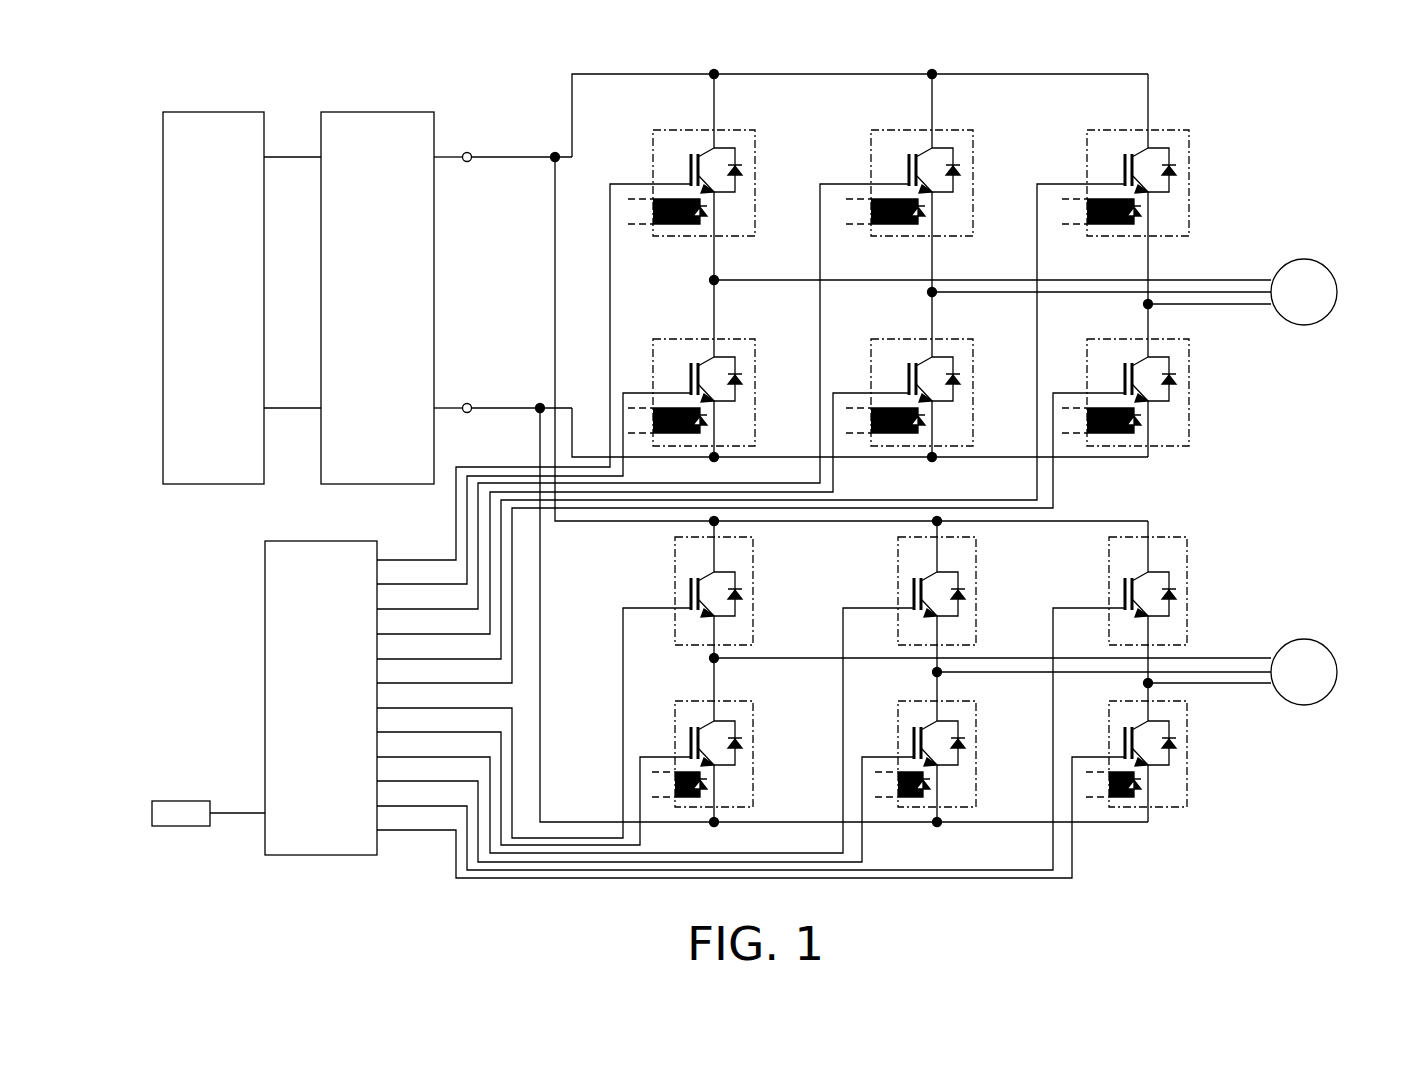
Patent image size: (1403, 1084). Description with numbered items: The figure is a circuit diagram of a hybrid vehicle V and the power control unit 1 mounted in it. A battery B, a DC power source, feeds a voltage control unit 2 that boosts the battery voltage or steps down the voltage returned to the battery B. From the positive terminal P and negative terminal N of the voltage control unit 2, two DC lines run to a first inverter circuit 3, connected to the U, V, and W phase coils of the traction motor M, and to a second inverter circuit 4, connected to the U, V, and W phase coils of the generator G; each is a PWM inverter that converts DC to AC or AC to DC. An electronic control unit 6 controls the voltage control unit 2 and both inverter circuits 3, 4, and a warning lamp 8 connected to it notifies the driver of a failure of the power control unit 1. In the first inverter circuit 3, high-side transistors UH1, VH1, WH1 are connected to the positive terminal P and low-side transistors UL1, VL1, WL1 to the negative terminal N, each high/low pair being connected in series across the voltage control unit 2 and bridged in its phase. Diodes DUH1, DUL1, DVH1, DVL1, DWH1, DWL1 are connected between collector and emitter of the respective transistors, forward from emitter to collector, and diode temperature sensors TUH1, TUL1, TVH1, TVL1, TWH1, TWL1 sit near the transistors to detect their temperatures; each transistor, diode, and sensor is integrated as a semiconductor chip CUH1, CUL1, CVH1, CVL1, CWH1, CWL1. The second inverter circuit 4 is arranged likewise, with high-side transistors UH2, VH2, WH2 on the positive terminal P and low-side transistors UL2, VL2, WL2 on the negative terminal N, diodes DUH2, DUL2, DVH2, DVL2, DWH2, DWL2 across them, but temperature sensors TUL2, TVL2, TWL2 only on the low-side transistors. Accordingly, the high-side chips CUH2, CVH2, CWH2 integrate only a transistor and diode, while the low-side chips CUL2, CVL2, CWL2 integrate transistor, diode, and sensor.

The vehicle V is at (180, 66).
The power control unit 1 is at (330, 96).
The battery B is at (240, 112).
The voltage control unit 2 is at (414, 112).
The positive terminal P is at (470, 153).
The negative terminal N is at (470, 404).
The first inverter circuit 3 is at (1283, 152).
The second inverter circuit 4 is at (1274, 568).
The electronic control unit 6 is at (286, 541).
The warning lamp 8 is at (194, 801).
The traction motor M is at (1327, 270).
The generator G is at (1327, 652).
The high-side U-phase transistor UH1 is at (702, 150).
The high-side U-phase semiconductor chip CUH1 is at (738, 130).
The diode DUH1 is at (742, 167).
The diode temperature sensor TUH1 is at (700, 222).
The low-side U-phase transistor UL1 is at (702, 360).
The low-side U-phase semiconductor chip CUL1 is at (776, 334).
The diode DUL1 is at (738, 380).
The diode temperature sensor TUL1 is at (707, 416).
The high-side V-phase transistor VH1 is at (920, 150).
The high-side V-phase semiconductor chip CVH1 is at (975, 108).
The diode DVH1 is at (960, 167).
The diode temperature sensor TVH1 is at (918, 222).
The low-side V-phase transistor VL1 is at (920, 360).
The low-side V-phase semiconductor chip CVL1 is at (994, 334).
The diode DVL1 is at (991, 384).
The diode temperature sensor TVL1 is at (925, 416).
The high-side W-phase transistor WH1 is at (1136, 150).
The high-side W-phase semiconductor chip CWH1 is at (1191, 108).
The diode DWH1 is at (1176, 167).
The diode temperature sensor TWH1 is at (1134, 222).
The low-side W-phase transistor WL1 is at (1136, 360).
The low-side W-phase semiconductor chip CWL1 is at (1210, 334).
The diode DWL1 is at (1207, 384).
The diode temperature sensor TWL1 is at (1141, 416).
The high-side U-phase transistor UH2 is at (690, 592).
The high-side U-phase semiconductor chip CUH2 is at (790, 550).
The diode DUH2 is at (740, 590).
The low-side U-phase transistor UL2 is at (690, 740).
The low-side U-phase semiconductor chip CUL2 is at (790, 710).
The diode DUL2 is at (740, 740).
The diode temperature sensor TUL2 is at (708, 785).
The high-side V-phase transistor VH2 is at (913, 592).
The high-side V-phase semiconductor chip CVH2 is at (1013, 550).
The diode DVH2 is at (963, 590).
The low-side V-phase transistor VL2 is at (913, 740).
The low-side V-phase semiconductor chip CVL2 is at (1013, 710).
The diode DVL2 is at (963, 740).
The diode temperature sensor TVL2 is at (931, 785).
The high-side W-phase transistor WH2 is at (1124, 592).
The high-side W-phase semiconductor chip CWH2 is at (1224, 550).
The diode DWH2 is at (1174, 590).
The low-side W-phase transistor WL2 is at (1124, 740).
The low-side W-phase semiconductor chip CWL2 is at (1224, 710).
The diode DWL2 is at (1174, 740).
The diode temperature sensor TWL2 is at (1142, 785).